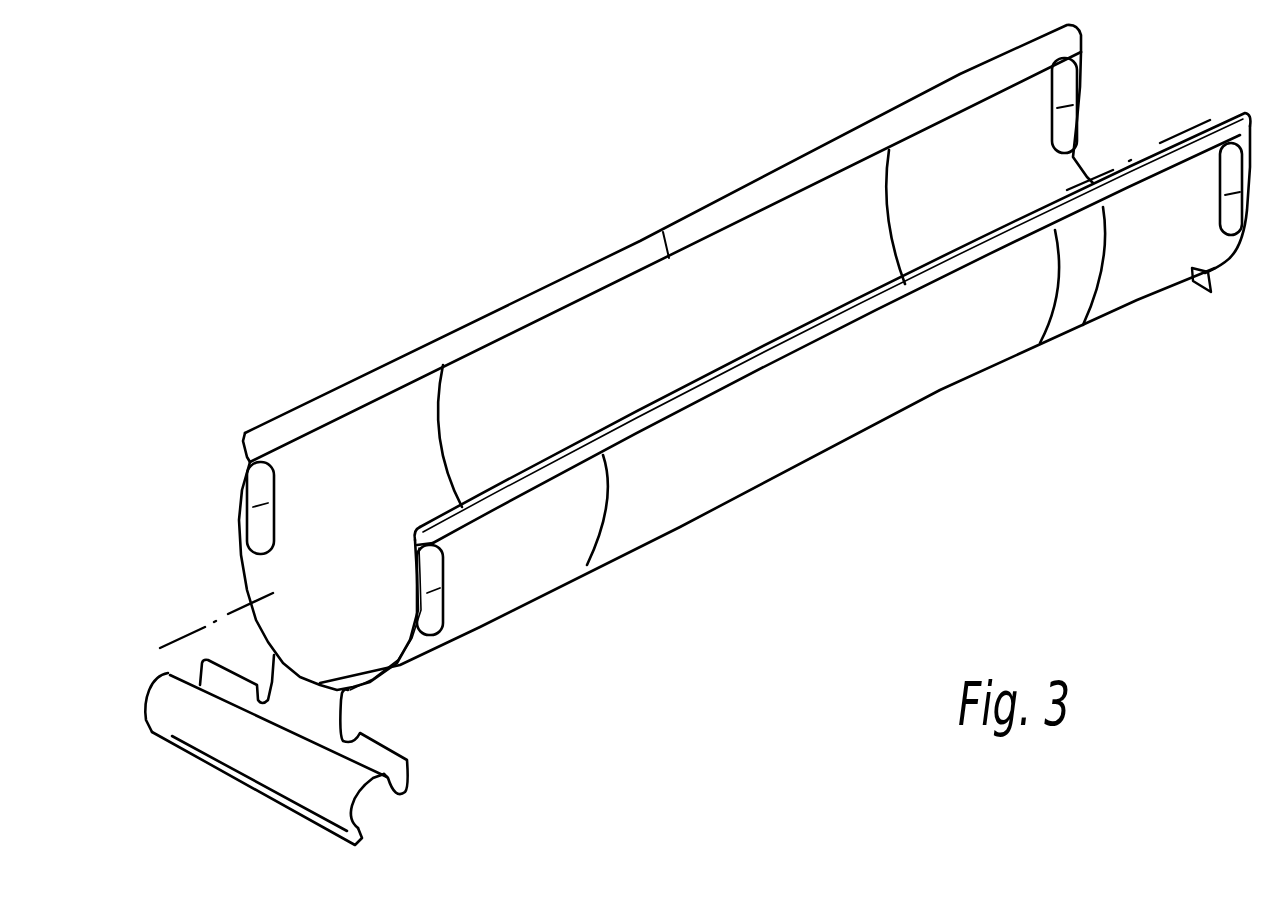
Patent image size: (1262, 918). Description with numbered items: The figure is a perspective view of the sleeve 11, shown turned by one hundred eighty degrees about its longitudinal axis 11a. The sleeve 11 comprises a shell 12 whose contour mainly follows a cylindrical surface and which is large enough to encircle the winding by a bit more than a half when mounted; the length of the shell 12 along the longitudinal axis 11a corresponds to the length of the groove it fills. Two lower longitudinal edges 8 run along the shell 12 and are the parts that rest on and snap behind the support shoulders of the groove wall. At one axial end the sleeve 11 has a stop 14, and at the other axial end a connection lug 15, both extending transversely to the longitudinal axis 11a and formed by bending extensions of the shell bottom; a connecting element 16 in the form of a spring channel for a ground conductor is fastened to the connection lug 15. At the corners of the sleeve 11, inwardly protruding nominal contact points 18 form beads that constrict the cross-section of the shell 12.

The lower longitudinal edge 8 is at (793, 180).
The sleeve 11 is at (532, 236).
The longitudinal axis 11a is at (185, 637).
The shell 12 is at (713, 277).
The stop 14 is at (1190, 290).
The connection lug 15 is at (303, 703).
The connecting element 16 is at (235, 752).
The nominal contact point 18 is at (258, 498).